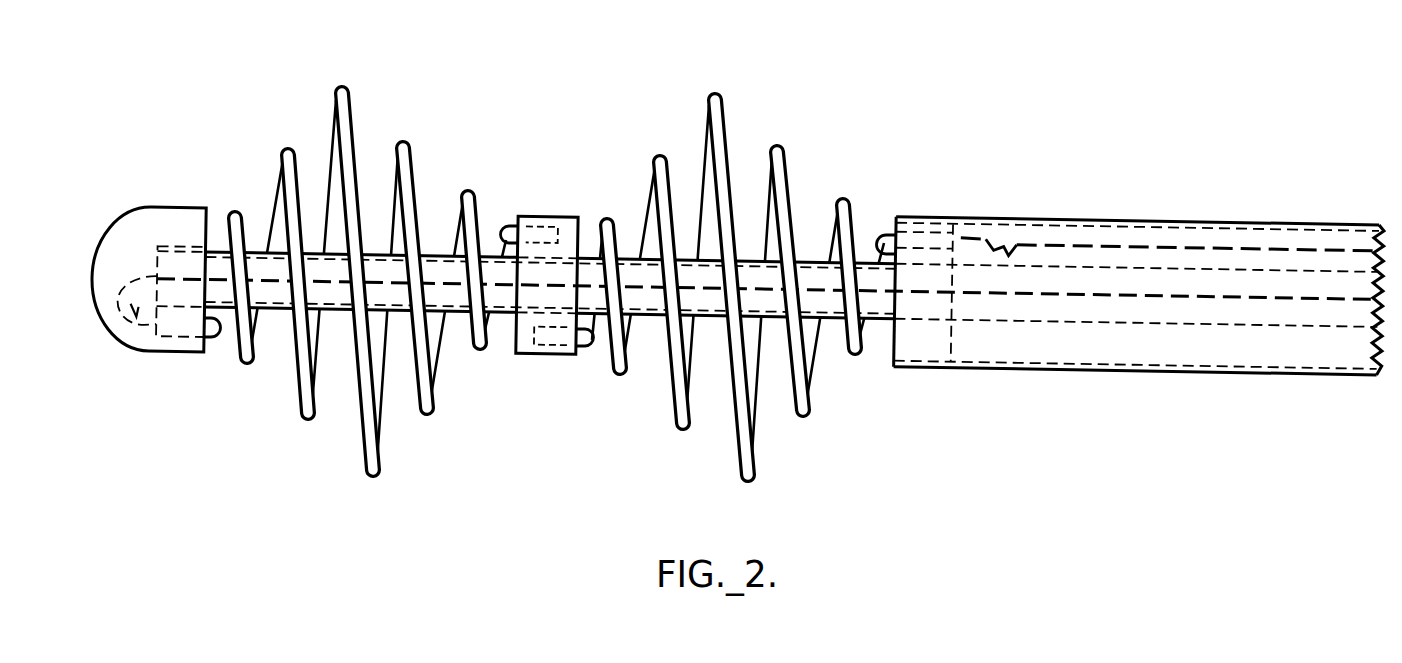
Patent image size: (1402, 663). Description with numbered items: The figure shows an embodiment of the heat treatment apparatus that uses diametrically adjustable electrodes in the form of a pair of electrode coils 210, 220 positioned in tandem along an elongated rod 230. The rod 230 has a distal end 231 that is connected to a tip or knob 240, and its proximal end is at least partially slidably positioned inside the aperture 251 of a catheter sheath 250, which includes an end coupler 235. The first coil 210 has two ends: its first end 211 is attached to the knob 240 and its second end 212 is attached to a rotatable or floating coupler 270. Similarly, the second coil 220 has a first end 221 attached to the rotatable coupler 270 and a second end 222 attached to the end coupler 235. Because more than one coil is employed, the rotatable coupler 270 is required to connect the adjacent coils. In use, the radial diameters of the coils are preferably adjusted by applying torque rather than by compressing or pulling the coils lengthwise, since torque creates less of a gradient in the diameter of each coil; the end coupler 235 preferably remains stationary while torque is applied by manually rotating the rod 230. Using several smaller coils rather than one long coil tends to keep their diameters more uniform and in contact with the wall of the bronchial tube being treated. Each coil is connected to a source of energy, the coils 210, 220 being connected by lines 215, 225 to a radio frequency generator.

The electrode coil 210 is at (343, 86).
The first end 211 is at (218, 340).
The second end 212 is at (508, 226).
The line 215 is at (1243, 250).
The electrode coil 220 is at (717, 93).
The first end 221 is at (590, 348).
The second end 222 is at (885, 233).
The line 225 is at (1232, 300).
The elongated rod 230 is at (1040, 267).
The distal end 231 is at (187, 247).
The end coupler 235 is at (912, 348).
The tip or knob 240 is at (95, 312).
The catheter sheath 250 is at (1105, 222).
The aperture 251 is at (1085, 355).
The rotatable or floating coupler 270 is at (567, 216).